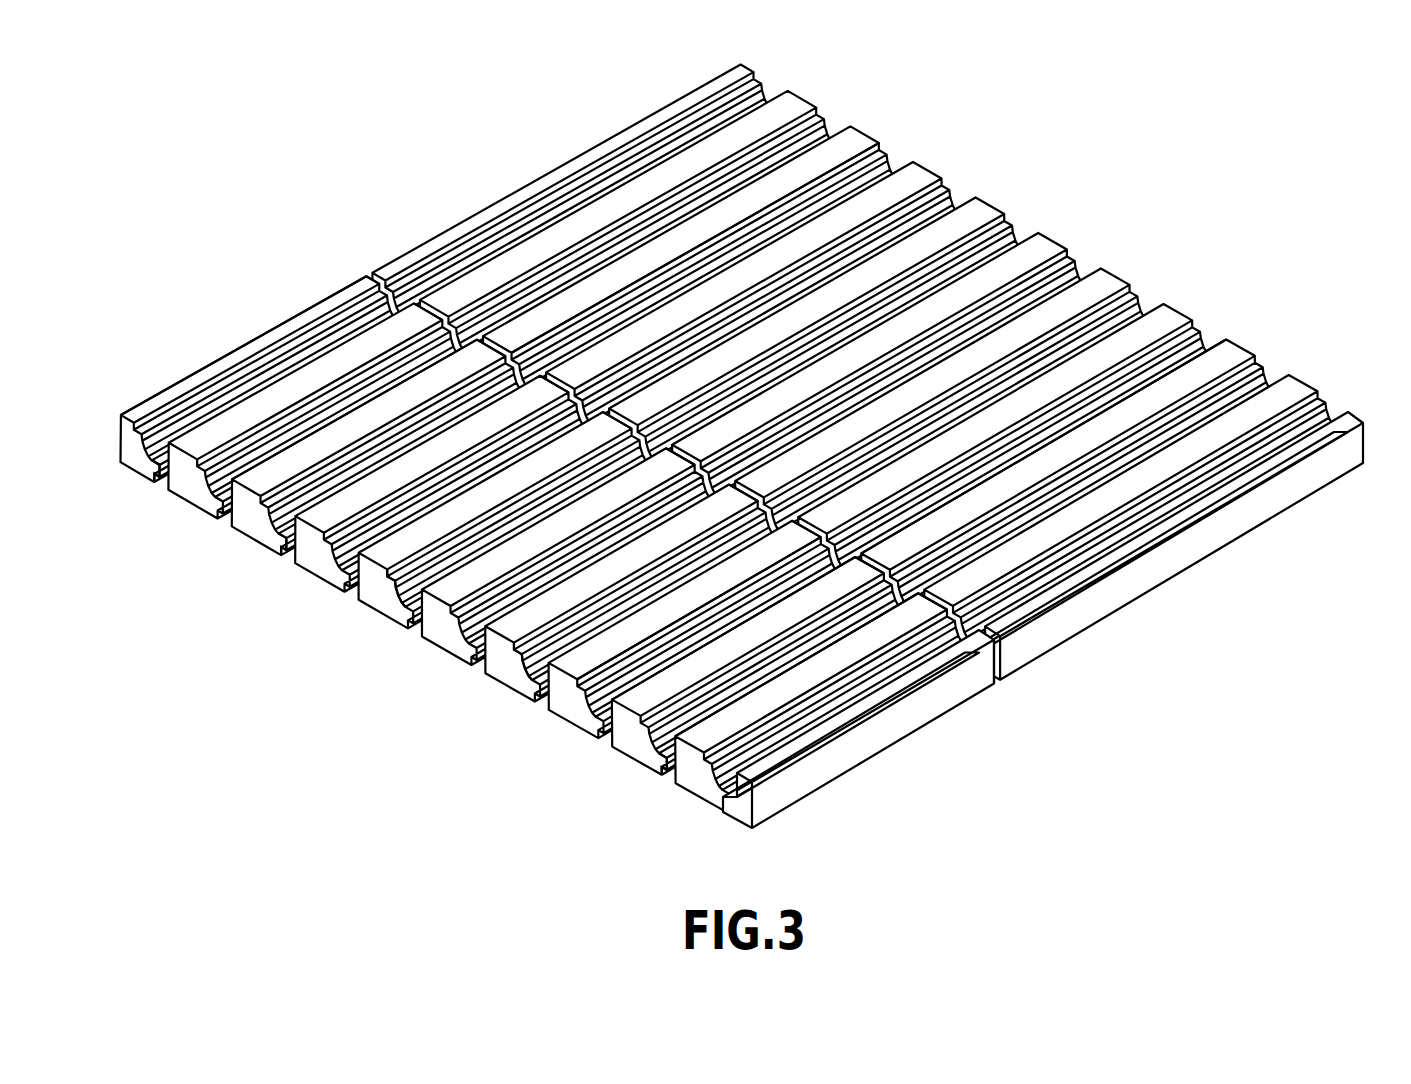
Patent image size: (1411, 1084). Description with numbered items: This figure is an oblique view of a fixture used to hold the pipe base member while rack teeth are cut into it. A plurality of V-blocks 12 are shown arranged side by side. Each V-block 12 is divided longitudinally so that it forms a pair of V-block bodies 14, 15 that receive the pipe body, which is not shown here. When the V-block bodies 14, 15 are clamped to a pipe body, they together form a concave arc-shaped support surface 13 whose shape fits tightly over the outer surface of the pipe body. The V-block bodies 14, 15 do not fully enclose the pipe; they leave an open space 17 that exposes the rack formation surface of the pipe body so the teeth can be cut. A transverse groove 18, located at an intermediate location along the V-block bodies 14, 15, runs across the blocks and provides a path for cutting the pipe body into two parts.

The V-block 12 is at (1027, 257).
The concave arc-shaped support surface 13 is at (1322, 418).
The V-block body 14 is at (648, 775).
The V-block body 15 is at (692, 795).
The open space 17 is at (785, 650).
The transverse groove 18 is at (992, 660).